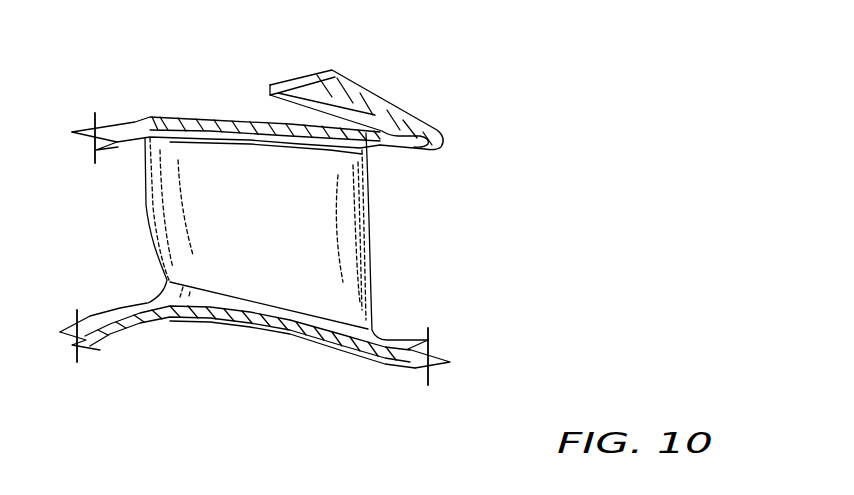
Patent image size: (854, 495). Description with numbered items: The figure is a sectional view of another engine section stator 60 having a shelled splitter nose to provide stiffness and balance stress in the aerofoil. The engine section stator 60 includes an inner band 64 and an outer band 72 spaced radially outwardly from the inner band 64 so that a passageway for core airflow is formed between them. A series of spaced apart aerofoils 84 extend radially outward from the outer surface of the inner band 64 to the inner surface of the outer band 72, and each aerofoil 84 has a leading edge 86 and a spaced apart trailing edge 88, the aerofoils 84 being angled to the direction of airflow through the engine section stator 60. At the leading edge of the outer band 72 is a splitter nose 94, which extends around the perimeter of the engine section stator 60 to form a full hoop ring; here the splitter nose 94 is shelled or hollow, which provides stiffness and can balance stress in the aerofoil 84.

The engine section stator 60 is at (487, 130).
The inner band 64 is at (275, 330).
The outer band 72 is at (195, 124).
The aerofoil 84 is at (330, 180).
The leading edge 86 is at (365, 258).
The trailing edge 88 is at (150, 213).
The splitter nose 94 is at (373, 103).